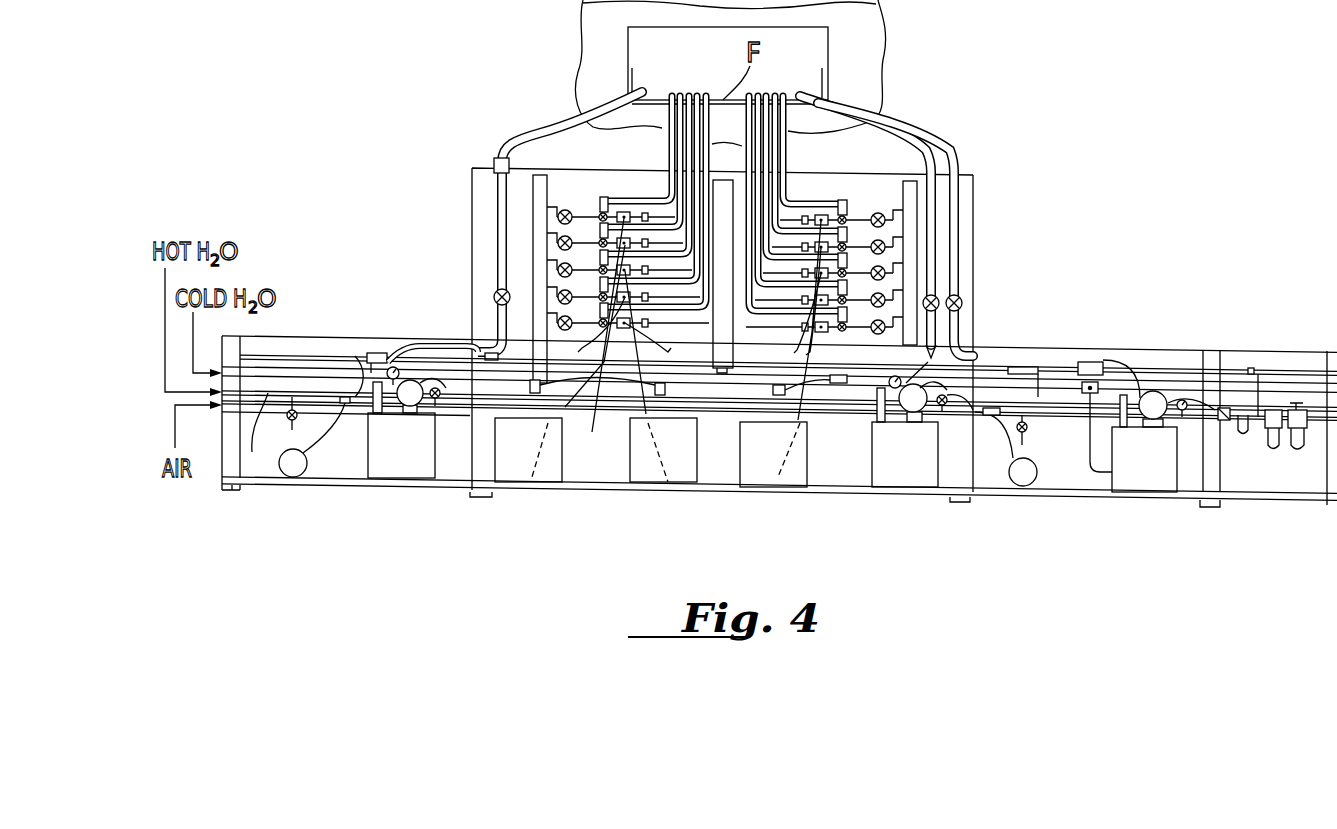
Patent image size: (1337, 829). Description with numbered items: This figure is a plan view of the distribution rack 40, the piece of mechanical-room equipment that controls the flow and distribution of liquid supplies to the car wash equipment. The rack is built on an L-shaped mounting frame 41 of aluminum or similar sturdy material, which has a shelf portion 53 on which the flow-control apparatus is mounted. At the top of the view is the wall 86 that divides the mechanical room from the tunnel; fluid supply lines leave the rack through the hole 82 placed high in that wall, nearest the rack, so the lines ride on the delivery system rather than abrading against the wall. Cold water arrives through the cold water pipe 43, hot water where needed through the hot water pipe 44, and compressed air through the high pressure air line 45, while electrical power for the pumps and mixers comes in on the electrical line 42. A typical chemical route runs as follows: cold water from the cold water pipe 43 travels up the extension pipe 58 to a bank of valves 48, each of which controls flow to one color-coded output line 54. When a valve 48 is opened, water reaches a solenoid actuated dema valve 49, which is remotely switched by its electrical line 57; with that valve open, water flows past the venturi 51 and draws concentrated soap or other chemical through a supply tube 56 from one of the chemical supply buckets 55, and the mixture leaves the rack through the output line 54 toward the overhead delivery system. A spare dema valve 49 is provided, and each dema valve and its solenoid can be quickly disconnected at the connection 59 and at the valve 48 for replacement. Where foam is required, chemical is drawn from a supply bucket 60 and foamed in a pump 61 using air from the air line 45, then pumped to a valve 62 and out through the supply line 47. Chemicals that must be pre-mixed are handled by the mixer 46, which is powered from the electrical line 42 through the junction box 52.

The distribution rack 40 is at (1060, 257).
The mounting frame 41 is at (890, 177).
The electrical line 42 is at (318, 356).
The cold water pipe 43 is at (268, 370).
The hot water pipe 44 is at (279, 420).
The high pressure air line 45 is at (256, 434).
The mixer 46 is at (293, 467).
The supply line 47 is at (953, 253).
The valve 48 is at (887, 210).
The solenoid actuated dema valve 49 is at (841, 205).
The venturi 51 is at (553, 153).
The junction box 52 is at (372, 352).
The shelf portion 53 is at (690, 492).
The output line 54 is at (750, 152).
The buckets 55 is at (793, 477).
The supply tube 56 is at (693, 340).
The electrical line 57 is at (825, 200).
The extension pipe 58 is at (540, 276).
The connection 59 is at (813, 204).
The supply bucket 60 is at (1152, 475).
The pump 61 is at (1155, 398).
The valve 62 is at (963, 302).
The hole 82 is at (634, 47).
The wall 86 is at (876, 54).